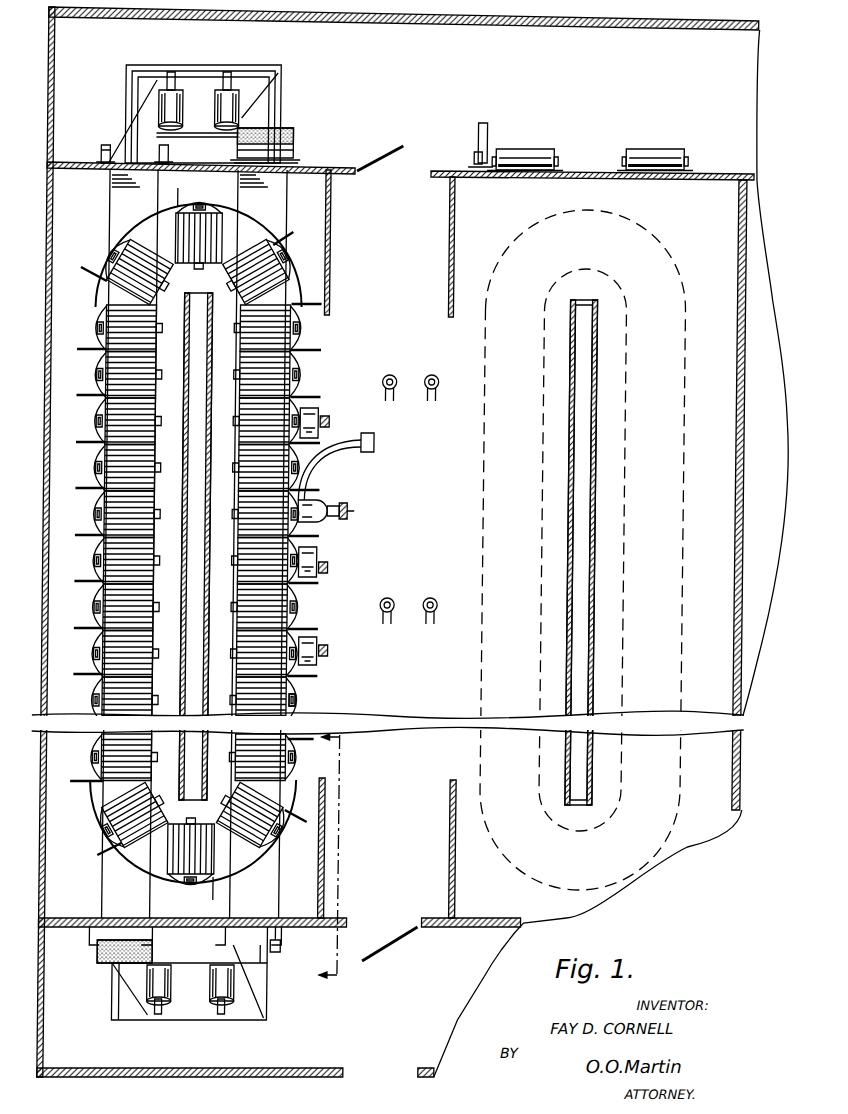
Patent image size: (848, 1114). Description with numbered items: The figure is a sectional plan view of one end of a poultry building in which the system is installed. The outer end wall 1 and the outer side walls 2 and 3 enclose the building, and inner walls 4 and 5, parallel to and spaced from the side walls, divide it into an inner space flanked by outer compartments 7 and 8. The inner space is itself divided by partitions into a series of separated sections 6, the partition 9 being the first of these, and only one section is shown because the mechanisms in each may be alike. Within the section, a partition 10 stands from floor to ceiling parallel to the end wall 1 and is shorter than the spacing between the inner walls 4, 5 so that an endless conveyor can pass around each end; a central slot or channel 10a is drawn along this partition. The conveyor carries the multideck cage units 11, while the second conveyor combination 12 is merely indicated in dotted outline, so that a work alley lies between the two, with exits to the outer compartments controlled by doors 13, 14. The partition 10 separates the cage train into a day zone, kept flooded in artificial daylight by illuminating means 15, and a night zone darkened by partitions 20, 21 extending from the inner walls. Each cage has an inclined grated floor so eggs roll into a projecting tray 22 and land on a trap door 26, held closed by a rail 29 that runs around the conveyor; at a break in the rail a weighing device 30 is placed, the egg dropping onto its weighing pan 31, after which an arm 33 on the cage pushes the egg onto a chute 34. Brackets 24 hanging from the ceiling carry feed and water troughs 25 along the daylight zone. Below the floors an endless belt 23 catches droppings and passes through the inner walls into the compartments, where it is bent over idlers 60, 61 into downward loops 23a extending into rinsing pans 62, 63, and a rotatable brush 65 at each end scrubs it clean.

The outer end wall 1 is at (49, 448).
The outer side wall 2 is at (253, 1077).
The outer side wall 3 is at (136, 18).
The inner wall 4 is at (495, 928).
The inner wall 5 is at (587, 171).
The section 6 is at (596, 476).
The outer compartment 7 is at (360, 872).
The outer compartment 8 is at (424, 79).
The partition 9 is at (741, 556).
The partition 10 is at (574, 491).
The slot channel 10a is at (579, 536).
The cage unit 11 is at (148, 546).
The second conveyor combination 12 is at (522, 590).
The door 13 is at (389, 944).
The door 14 is at (380, 156).
The illuminating means 15 is at (410, 491).
The partition 20 is at (334, 871).
The partition 21 is at (333, 286).
The projecting tray 22 is at (303, 711).
The endless belt 23 is at (282, 894).
The downwardly directed loop 23a is at (259, 118).
The bracket 24 is at (335, 420).
The trough 25 is at (322, 410).
The trap door 26 is at (303, 695).
The rail 29 is at (297, 791).
The weighing device 30 is at (350, 509).
The weighing pan 31 is at (326, 507).
The arm 33 is at (316, 628).
The chute 34 is at (380, 451).
The idler 60 is at (111, 143).
The idler 61 is at (246, 88).
The rinsing pan 62 is at (275, 1010).
The rinsing pan 63 is at (198, 72).
The rotatable brush 65 is at (295, 137).